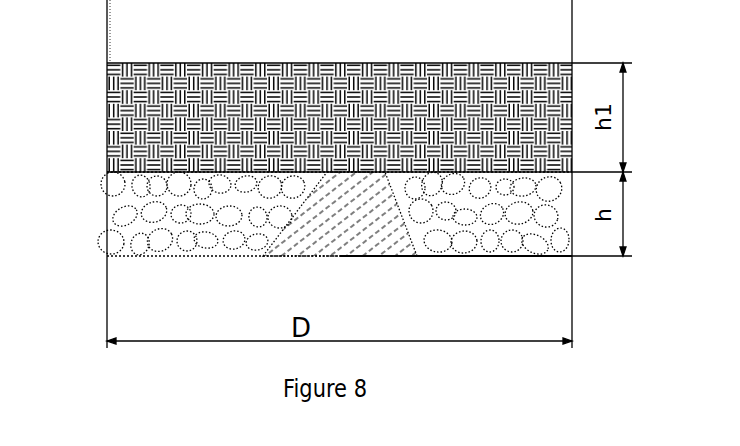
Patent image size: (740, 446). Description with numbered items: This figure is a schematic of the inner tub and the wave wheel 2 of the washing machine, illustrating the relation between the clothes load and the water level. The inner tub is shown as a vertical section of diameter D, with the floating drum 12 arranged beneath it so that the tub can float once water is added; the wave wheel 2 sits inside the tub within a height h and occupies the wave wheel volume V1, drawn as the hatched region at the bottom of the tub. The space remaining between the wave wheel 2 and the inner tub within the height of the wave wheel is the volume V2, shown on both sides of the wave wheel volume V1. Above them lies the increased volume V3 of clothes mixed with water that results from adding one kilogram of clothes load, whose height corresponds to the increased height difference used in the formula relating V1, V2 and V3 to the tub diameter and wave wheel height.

The floating drum 12 is at (110, 233).
The wave wheel 2 is at (442, 256).
The volume of the wave wheel V1 is at (340, 214).
The volume between the wave wheel and the inner tub V2 is at (332, 213).
The increased volume of the clothes mixing with water V3 is at (339, 117).